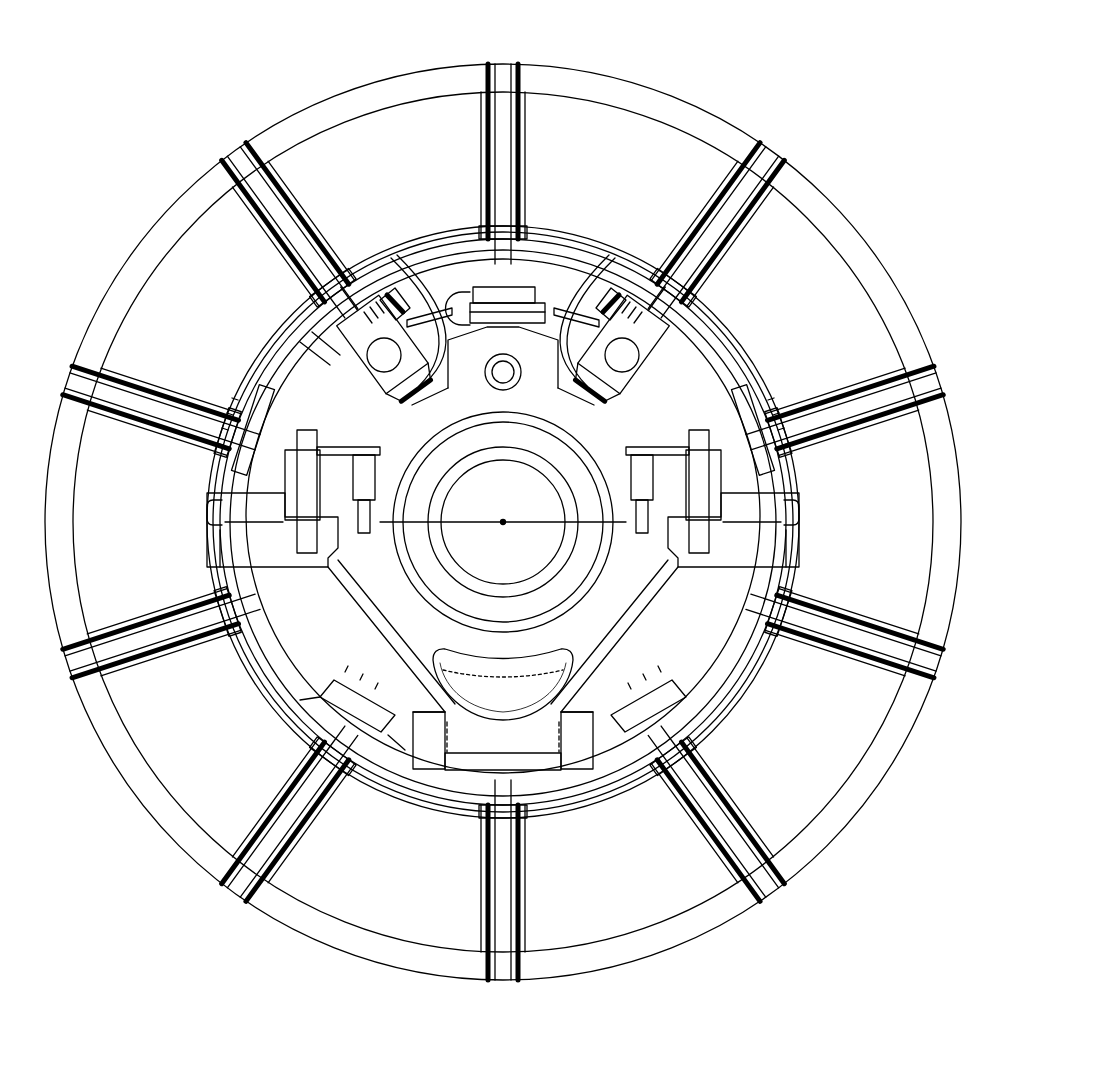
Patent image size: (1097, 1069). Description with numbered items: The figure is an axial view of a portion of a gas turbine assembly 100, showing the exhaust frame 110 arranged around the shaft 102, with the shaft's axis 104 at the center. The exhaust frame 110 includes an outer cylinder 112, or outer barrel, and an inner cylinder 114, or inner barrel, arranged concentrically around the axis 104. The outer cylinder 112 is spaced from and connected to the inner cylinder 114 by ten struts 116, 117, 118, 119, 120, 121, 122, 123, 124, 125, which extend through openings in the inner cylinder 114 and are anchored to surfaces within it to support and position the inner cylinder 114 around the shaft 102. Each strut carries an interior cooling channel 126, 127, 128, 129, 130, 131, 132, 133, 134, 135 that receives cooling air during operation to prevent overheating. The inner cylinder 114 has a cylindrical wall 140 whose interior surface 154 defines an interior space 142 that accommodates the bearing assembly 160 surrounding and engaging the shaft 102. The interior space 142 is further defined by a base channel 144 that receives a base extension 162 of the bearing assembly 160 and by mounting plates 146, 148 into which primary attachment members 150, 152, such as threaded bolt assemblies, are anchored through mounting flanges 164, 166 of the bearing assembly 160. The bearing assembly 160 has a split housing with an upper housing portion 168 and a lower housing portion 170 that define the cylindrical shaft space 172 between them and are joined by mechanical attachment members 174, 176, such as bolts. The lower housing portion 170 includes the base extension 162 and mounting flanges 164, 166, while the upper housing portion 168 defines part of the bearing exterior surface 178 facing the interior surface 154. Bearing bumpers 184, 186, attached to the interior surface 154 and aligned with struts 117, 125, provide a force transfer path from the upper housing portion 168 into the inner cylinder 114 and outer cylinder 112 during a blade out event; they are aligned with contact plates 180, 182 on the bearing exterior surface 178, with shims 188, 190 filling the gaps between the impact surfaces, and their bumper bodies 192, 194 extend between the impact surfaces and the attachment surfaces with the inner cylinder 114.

The gas turbine assembly 100 is at (181, 111).
The shaft 102 is at (486, 569).
The axis 104 is at (503, 522).
The exhaust frame 110 is at (752, 115).
The outer cylinder 112 is at (417, 78).
The inner cylinder 114 is at (410, 242).
The strut 116 is at (524, 127).
The strut 117 is at (758, 200).
The strut 118 is at (866, 440).
The strut 119 is at (833, 660).
The strut 120 is at (712, 848).
The strut 121 is at (476, 903).
The strut 122 is at (272, 810).
The strut 123 is at (125, 606).
The strut 124 is at (258, 404).
The strut 125 is at (318, 188).
The cooling channel 126 is at (504, 182).
The cooling channel 127 is at (727, 232).
The cooling channel 128 is at (810, 470).
The cooling channel 129 is at (770, 645).
The cooling channel 130 is at (700, 803).
The cooling channel 131 is at (490, 880).
The cooling channel 132 is at (303, 733).
The cooling channel 133 is at (193, 602).
The cooling channel 134 is at (170, 378).
The cooling channel 135 is at (290, 170).
The cylindrical wall 140 is at (243, 668).
The interior space 142 is at (258, 692).
The base channel 144 is at (440, 782).
The mounting plate 146 is at (237, 540).
The mounting plate 148 is at (778, 542).
The primary attachment member 150 is at (262, 398).
The primary attachment member 152 is at (718, 398).
The interior surface 154 is at (303, 342).
The bearing assembly 160 is at (395, 630).
The base extension 162 is at (543, 757).
The mounting flange 164 is at (300, 478).
The mounting flange 166 is at (778, 418).
The upper housing portion 168 is at (528, 285).
The lower housing portion 170 is at (613, 605).
The cylindrical shaft space 172 is at (412, 595).
The mechanical attachment member 174 is at (365, 536).
The mechanical attachment member 176 is at (640, 536).
The bearing exterior surface 178 is at (447, 398).
The contact plate 180 is at (412, 405).
The contact plate 182 is at (592, 405).
The bearing bumper 184 is at (390, 290).
The bearing bumper 186 is at (642, 290).
The shim 188 is at (455, 282).
The shim 190 is at (590, 285).
The bumper body 192 is at (622, 300).
The bumper body 194 is at (385, 300).